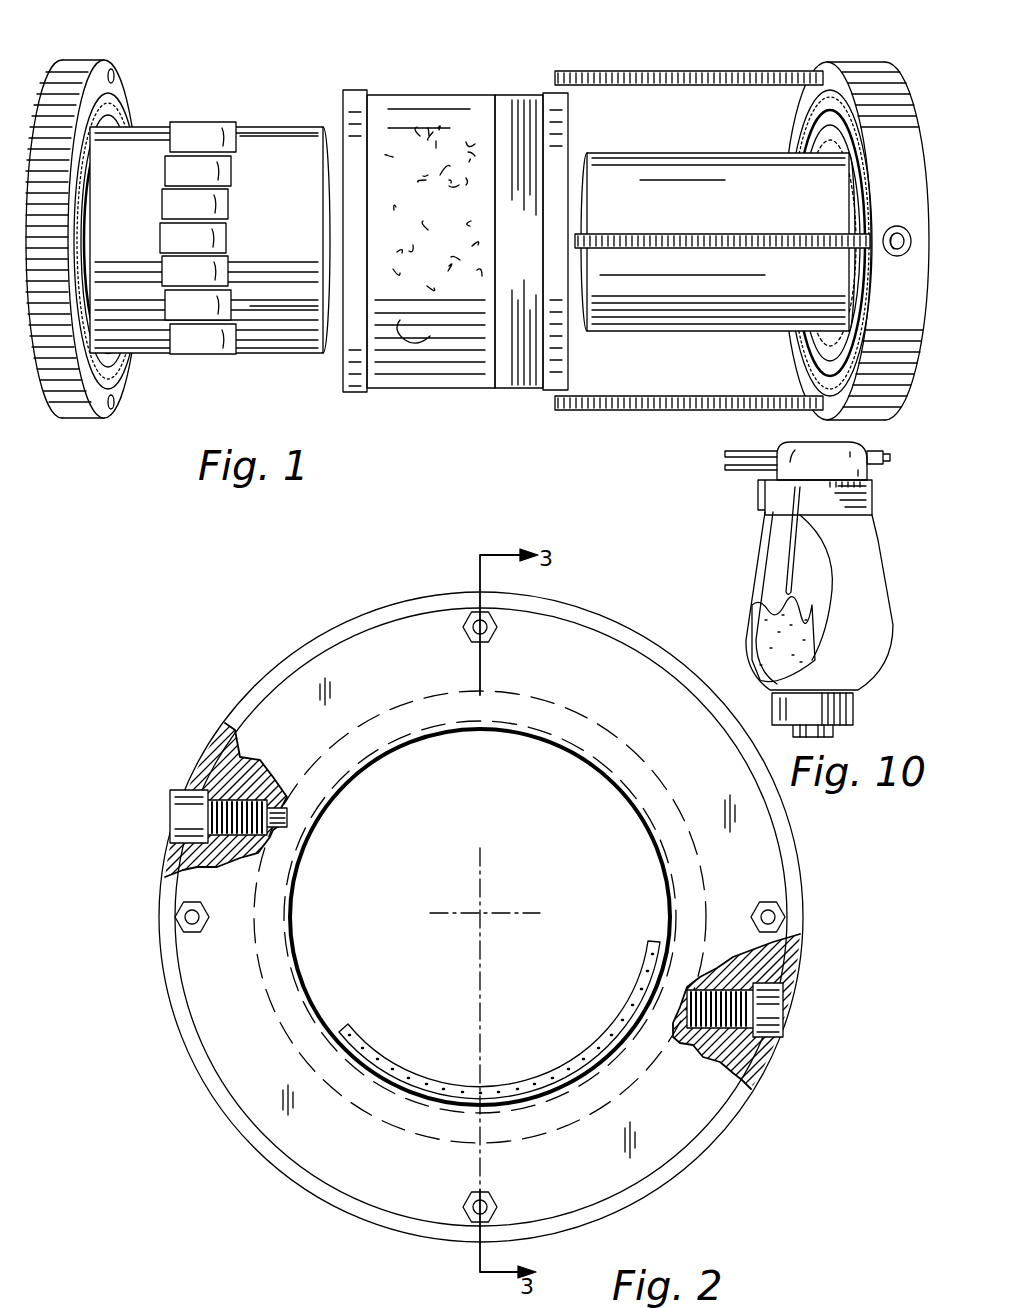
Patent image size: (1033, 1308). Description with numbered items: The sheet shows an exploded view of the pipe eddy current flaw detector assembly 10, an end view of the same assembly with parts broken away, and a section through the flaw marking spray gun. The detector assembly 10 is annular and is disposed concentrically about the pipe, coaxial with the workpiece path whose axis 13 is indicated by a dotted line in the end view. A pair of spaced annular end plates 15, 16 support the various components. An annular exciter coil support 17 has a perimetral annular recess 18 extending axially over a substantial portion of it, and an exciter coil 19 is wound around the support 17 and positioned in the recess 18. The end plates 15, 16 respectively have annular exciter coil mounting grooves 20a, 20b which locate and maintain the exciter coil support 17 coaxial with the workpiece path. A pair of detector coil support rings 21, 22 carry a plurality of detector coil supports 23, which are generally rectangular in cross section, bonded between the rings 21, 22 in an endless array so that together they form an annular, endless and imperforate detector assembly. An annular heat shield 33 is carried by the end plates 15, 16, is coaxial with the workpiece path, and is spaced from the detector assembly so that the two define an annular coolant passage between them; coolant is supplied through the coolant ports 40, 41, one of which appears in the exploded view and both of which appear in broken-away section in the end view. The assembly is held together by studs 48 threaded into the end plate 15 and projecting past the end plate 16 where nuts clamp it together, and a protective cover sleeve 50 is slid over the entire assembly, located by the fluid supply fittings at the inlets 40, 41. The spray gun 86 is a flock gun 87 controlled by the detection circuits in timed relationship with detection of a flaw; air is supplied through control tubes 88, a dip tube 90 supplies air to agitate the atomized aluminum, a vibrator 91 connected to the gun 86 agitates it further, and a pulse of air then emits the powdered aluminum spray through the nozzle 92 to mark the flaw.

In FIG. 1, the detector assembly 10 is at (462, 64).
In FIG. 2, the detector assembly 10 is at (216, 718).
In FIG. 2, the workpiece path axis 13 is at (483, 913).
In FIG. 1, the end plate 15 is at (82, 62).
In FIG. 1, the end plate 16 is at (858, 62).
In FIG. 2, the end plate 16 is at (372, 652).
In FIG. 1, the exciter coil support 17 is at (356, 90).
In FIG. 1, the annular recess 18 is at (387, 95).
In FIG. 1, the exciter coil 19 is at (499, 95).
In FIG. 1, the exciter coil mounting groove 20a is at (112, 98).
In FIG. 1, the exciter coil mounting groove 20b is at (802, 100).
In FIG. 1, the detector coil support ring 21 is at (150, 134).
In FIG. 1, the detector coil support ring 22 is at (281, 127).
In FIG. 1, the detector coil supports 23 is at (225, 200).
In FIG. 1, the heat shield 33 is at (664, 332).
In FIG. 1, the coolant port 40 is at (899, 226).
In FIG. 2, the coolant port 40 is at (205, 820).
In FIG. 2, the coolant port 41 is at (758, 1012).
In FIG. 1, the studs 48 is at (672, 411).
In FIG. 2, the protective cover sleeve 50 is at (312, 1197).
In FIG. 10, the flock gun 86 is at (860, 600).
In FIG. 10, the flock gun 87 is at (757, 640).
In FIG. 10, the control tubes 88 is at (725, 468).
In FIG. 10, the dip tube 90 is at (790, 560).
In FIG. 10, the vibrator 91 is at (853, 718).
In FIG. 10, the nozzle 92 is at (886, 455).